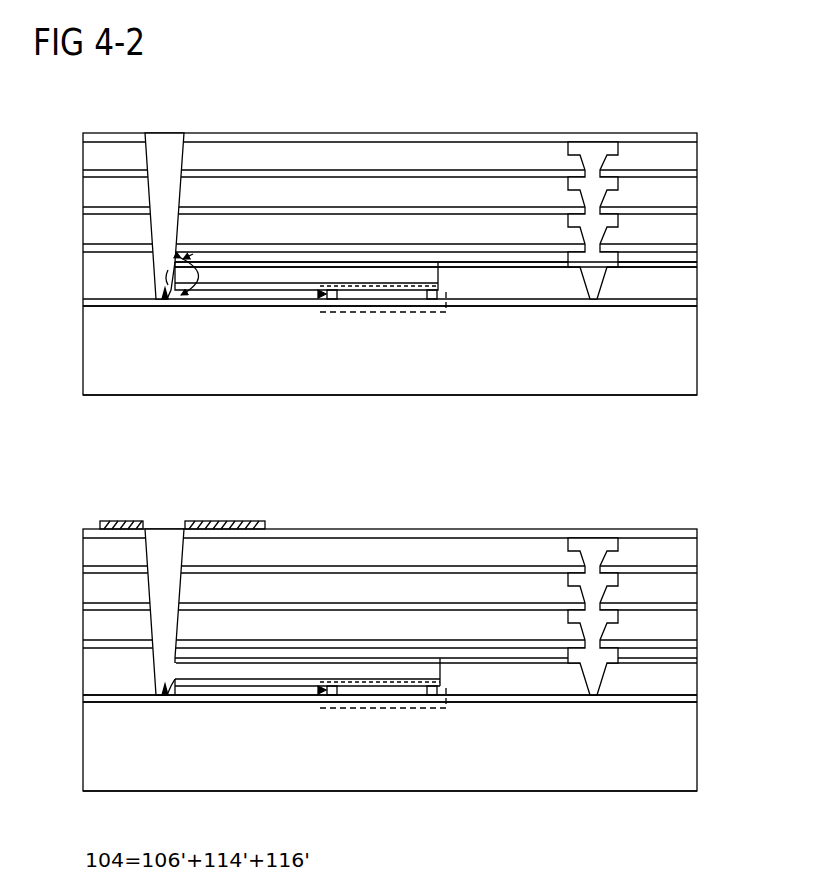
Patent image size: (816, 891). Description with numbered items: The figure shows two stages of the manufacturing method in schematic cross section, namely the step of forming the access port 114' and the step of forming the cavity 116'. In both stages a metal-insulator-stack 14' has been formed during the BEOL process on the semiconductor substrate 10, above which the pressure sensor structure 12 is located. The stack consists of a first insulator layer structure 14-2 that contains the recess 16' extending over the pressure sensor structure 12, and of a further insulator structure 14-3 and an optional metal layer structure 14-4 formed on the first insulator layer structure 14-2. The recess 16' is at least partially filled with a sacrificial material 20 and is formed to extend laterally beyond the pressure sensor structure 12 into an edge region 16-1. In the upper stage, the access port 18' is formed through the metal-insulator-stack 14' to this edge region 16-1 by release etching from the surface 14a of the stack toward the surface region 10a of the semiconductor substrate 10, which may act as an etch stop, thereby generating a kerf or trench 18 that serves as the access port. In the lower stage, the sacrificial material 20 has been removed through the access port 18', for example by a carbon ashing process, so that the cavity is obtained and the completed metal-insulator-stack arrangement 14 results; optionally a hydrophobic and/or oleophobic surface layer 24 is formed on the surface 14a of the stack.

The semiconductor substrate 10 is at (690, 353).
The surface region of the semiconductor substrate 10a is at (700, 695).
The pressure sensor structure 12 is at (408, 307).
The metal-insulator-stack arrangement 14 is at (777, 615).
The metal-insulator-stack 14' is at (796, 219).
The first insulator layer structure 14-2 is at (707, 252).
The further insulator structure 14-3 is at (707, 133).
The metal layer structure 14-4 is at (595, 150).
The surface of the metal-insulator-stack 14a is at (606, 540).
The recess 16' is at (305, 331).
The edge region of the recess 16-1 is at (253, 306).
The kerf or trench 18 is at (330, 709).
The access port 18' is at (232, 420).
The sacrificial material 20 is at (446, 275).
The hydrophobic and/or oleophobic surface layer 24 is at (142, 520).
The step of forming the access port 114' is at (54, 246).
The step of forming the cavity 116' is at (54, 640).